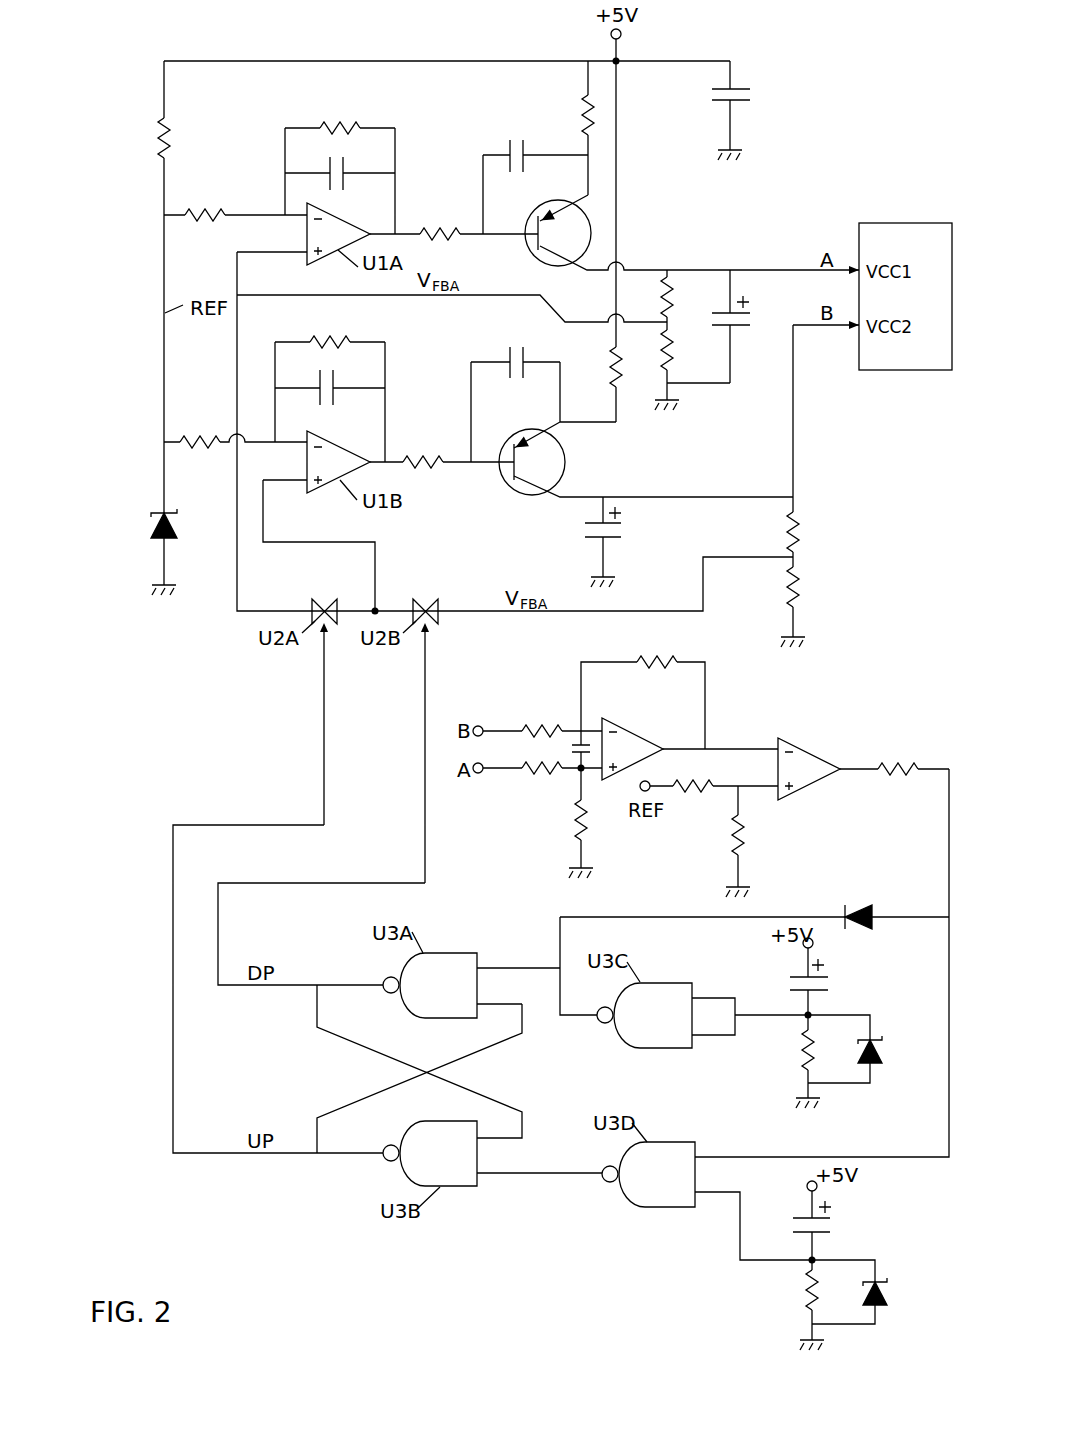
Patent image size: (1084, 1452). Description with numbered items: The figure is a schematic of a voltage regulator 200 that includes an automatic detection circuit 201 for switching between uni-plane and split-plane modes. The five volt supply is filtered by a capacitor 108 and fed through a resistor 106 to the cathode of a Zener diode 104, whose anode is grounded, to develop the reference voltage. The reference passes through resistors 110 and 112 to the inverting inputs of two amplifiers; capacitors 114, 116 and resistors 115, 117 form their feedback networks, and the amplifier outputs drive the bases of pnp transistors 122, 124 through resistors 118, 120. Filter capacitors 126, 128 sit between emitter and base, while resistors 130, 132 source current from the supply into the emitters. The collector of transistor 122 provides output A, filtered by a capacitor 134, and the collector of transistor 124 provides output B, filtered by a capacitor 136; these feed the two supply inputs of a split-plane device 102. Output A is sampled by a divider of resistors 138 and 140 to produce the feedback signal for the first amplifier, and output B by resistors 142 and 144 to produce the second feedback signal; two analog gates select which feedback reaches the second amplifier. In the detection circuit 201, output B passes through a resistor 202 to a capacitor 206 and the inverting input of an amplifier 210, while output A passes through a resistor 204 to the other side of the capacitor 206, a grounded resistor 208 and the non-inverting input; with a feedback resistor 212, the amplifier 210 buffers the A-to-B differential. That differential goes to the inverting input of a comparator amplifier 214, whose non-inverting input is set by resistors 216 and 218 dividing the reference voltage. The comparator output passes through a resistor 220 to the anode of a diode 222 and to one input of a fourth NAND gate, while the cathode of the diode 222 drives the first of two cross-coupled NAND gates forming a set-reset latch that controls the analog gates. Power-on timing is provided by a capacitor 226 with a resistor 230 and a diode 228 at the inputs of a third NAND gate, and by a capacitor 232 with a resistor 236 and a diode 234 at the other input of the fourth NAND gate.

The split-plane device 102 is at (897, 222).
The Zener diode 104 is at (148, 512).
The resistor 106 is at (173, 130).
The capacitor 108 is at (737, 92).
The resistor 110 is at (187, 212).
The resistor 112 is at (211, 427).
The capacitor 114 is at (343, 190).
The resistor 115 is at (352, 128).
The capacitor 116 is at (335, 397).
The resistor 117 is at (342, 342).
The resistor 118 is at (423, 232).
The resistor 120 is at (407, 455).
The transistor 122 is at (532, 248).
The transistor 124 is at (565, 471).
The filter capacitor 126 is at (510, 143).
The filter capacitor 128 is at (507, 350).
The resistor 130 is at (587, 100).
The resistor 132 is at (614, 356).
The capacitor 134 is at (742, 330).
The capacitor 136 is at (613, 538).
The resistor 138 is at (672, 273).
The resistor 140 is at (672, 352).
The resistor 142 is at (797, 528).
The resistor 144 is at (797, 585).
The voltage regulator 200 is at (832, 140).
The automatic detection circuit 201 is at (870, 700).
The resistor 202 is at (547, 725).
The resistor 204 is at (541, 779).
The capacitor 206 is at (578, 738).
The resistor 208 is at (572, 827).
The amplifier 210 is at (635, 727).
The feedback resistor 212 is at (658, 657).
The amplifier 214 is at (807, 748).
The resistor 216 is at (693, 787).
The resistor 218 is at (728, 845).
The resistor 220 is at (898, 763).
The diode 222 is at (873, 908).
The capacitor 226 is at (795, 975).
The diode 228 is at (885, 1048).
The resistor 230 is at (800, 1055).
The capacitor 232 is at (805, 1218).
The diode 234 is at (888, 1293).
The resistor 236 is at (807, 1300).